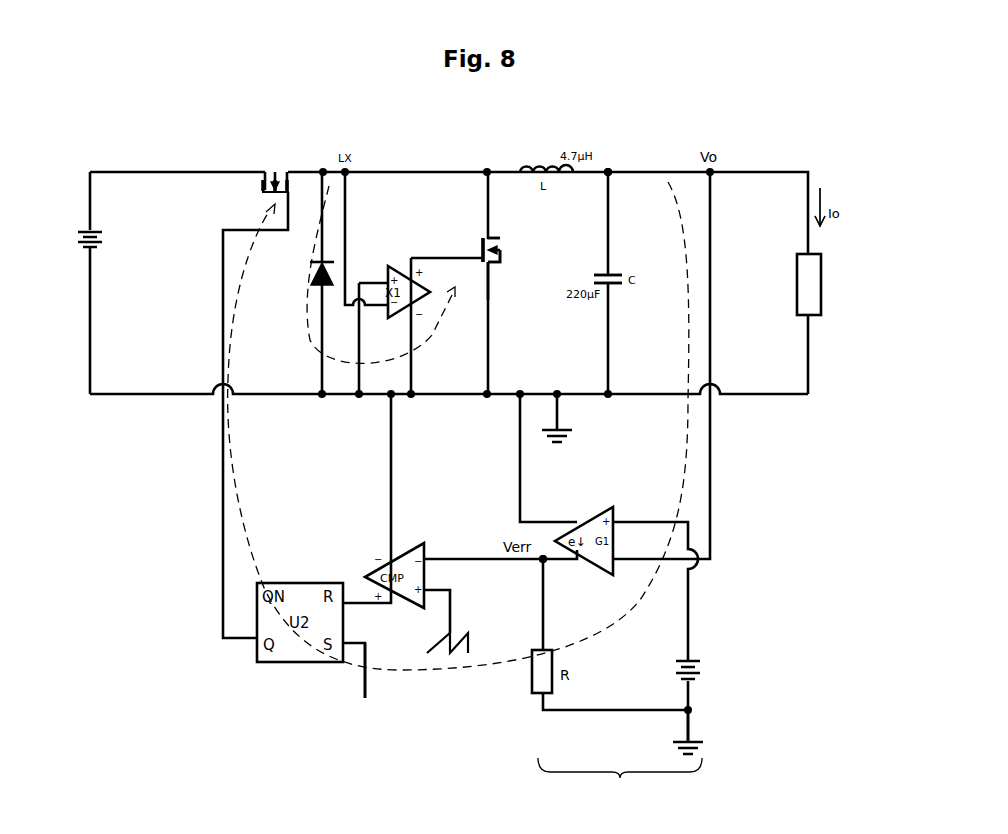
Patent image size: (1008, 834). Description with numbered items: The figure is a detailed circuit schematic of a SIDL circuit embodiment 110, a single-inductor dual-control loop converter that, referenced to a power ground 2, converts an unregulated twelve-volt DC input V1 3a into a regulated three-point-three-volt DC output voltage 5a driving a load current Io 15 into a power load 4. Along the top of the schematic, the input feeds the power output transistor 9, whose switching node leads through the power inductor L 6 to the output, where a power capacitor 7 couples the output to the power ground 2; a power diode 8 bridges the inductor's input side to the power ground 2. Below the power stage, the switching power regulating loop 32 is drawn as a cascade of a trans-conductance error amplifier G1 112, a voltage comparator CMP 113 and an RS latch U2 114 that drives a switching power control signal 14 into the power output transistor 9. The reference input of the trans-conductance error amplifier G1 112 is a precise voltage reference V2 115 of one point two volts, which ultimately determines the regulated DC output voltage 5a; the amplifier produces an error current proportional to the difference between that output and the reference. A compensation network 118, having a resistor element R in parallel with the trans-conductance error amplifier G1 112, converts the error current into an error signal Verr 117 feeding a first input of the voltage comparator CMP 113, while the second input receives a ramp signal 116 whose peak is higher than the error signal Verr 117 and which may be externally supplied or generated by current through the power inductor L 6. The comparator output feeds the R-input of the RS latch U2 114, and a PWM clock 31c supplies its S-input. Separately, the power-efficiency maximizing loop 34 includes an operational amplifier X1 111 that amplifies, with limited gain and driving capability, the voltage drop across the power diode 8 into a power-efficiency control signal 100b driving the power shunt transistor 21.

The SIDL circuit embodiment 110 is at (778, 118).
The power output transistor 9 is at (280, 168).
The switching power control signal 14 is at (270, 192).
The unregulated 12V DC input V1 3a is at (76, 236).
The power diode 8 is at (335, 273).
The operational amplifier X1 111 is at (393, 268).
The power-efficiency control signal 100b is at (480, 248).
The power shunt transistor 21 is at (504, 269).
The power inductor L 6 is at (543, 162).
The regulated 3.3V DC output voltage 5a is at (610, 170).
The power capacitor 7 is at (600, 274).
The power load 4 is at (815, 283).
The load current Io 15 is at (850, 224).
The power-efficiency maximizing loop 34 is at (302, 318).
The power ground 2 is at (608, 398).
The switching power regulating loop 32 is at (685, 487).
The trans-conductance error amplifier G1 112 is at (592, 518).
The voltage comparator CMP 113 is at (405, 548).
The RS latch U2 114 is at (298, 581).
The ramp signal 116 is at (428, 648).
The error signal Verr 117 is at (538, 566).
The precise voltage reference V2 115 is at (692, 654).
The PWM clock 31c is at (365, 700).
The compensation network 118 is at (617, 729).